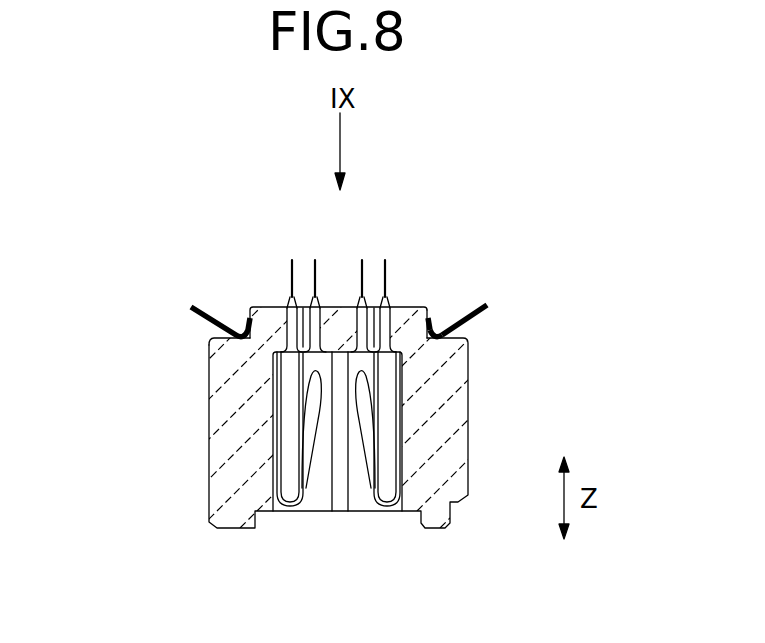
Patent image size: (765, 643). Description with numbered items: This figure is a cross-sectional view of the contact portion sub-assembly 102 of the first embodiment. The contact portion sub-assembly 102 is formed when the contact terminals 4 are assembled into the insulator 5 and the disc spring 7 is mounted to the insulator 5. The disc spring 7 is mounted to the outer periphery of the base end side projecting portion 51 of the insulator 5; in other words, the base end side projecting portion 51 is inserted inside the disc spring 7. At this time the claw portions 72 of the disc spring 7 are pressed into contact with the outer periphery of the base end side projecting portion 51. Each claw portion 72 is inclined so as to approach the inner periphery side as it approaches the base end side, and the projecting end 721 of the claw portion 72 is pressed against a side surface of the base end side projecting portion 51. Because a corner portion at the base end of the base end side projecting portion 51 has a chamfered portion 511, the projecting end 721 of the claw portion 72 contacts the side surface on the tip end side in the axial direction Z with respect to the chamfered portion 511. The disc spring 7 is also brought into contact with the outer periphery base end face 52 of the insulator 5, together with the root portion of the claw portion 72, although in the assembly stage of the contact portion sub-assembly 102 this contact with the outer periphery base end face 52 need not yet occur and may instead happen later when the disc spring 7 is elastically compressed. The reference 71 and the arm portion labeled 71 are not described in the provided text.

The contact portion sub-assembly 102 is at (178, 540).
The insulator 5 is at (223, 422).
The base end side projecting portion 51 is at (263, 306).
The chamfered portion 511 is at (428, 304).
The outer periphery base end face 52 is at (215, 328).
The contact terminal 4 is at (304, 505).
The disc spring 7 is at (470, 338).
The arm portion of metal fitting 71 is at (485, 312).
The claw portion 72 is at (243, 317).
The projecting end 721 is at (432, 317).